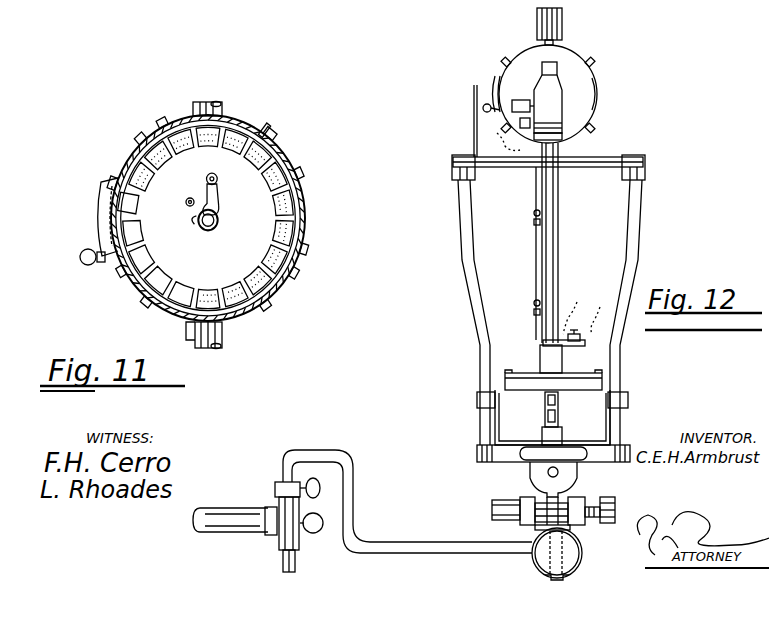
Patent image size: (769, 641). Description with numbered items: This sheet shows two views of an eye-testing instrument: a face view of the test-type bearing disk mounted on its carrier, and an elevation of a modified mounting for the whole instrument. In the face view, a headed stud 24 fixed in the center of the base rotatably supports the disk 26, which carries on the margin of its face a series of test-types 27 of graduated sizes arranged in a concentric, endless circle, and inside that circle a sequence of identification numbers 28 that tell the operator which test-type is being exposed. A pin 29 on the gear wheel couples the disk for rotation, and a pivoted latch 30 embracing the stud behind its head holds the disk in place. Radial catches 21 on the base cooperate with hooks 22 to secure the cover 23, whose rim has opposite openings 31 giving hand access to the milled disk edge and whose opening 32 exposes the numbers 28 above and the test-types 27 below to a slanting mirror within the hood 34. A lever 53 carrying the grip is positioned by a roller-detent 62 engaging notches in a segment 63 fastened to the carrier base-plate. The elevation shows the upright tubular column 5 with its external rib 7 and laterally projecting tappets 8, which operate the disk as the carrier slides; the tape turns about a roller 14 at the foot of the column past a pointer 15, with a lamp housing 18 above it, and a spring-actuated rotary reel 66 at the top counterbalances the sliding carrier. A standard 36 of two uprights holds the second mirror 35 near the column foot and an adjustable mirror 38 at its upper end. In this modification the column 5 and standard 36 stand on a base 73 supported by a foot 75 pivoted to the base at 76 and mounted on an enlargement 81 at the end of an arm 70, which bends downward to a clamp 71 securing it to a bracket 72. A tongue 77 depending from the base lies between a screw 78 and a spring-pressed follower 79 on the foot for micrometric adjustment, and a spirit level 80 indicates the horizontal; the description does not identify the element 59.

In FIG. 11, the tubular column 5 is at (226, 337).
In FIG. 12, the tubular column 5 is at (563, 232).
In FIG. 12, the rib 7 is at (534, 265).
In FIG. 12, the tappets 8 is at (534, 213).
In FIG. 12, the roller 14 is at (545, 413).
In FIG. 12, the pointer 15 is at (557, 400).
In FIG. 12, the housing 18 is at (562, 355).
In FIG. 11, the catches 21 is at (133, 141).
In FIG. 11, the hooks 22 is at (146, 133).
In FIG. 11, the cover 23 is at (298, 273).
In FIG. 12, the cover 23 is at (573, 98).
In FIG. 11, the headed stud 24 is at (214, 222).
In FIG. 11, the disk 26 is at (172, 250).
In FIG. 12, the disk 26 is at (597, 108).
In FIG. 11, the test-types 27 is at (237, 142).
In FIG. 11, the numbers 28 is at (247, 187).
In FIG. 11, the pin 29 is at (186, 203).
In FIG. 11, the pivoted latch 30 is at (214, 207).
In FIG. 11, the openings 31 is at (307, 247).
In FIG. 12, the opening 32 is at (557, 70).
In FIG. 12, the hood 34 is at (558, 118).
In FIG. 12, the second mirror 35 is at (588, 382).
In FIG. 12, the standard 36 is at (468, 305).
In FIG. 12, the adjustable mirror 38 is at (593, 167).
In FIG. 11, the lever 53 is at (91, 259).
In FIG. 12, the set screw 59 is at (533, 222).
In FIG. 11, the roller-detent 62 is at (101, 263).
In FIG. 11, the segment 63 is at (103, 237).
In FIG. 12, the segment 63 is at (498, 79).
In FIG. 12, the spring-actuated rotary reel 66 is at (561, 26).
In FIG. 12, the arm 70 is at (287, 450).
In FIG. 12, the clamp 71 is at (276, 490).
In FIG. 12, the bracket 72 is at (205, 508).
In FIG. 12, the base 73 is at (593, 452).
In FIG. 12, the foot 75 is at (577, 490).
In FIG. 12, the pivotal connection 76 is at (530, 472).
In FIG. 12, the tongue 77 is at (530, 528).
In FIG. 12, the screw 78 is at (617, 515).
In FIG. 12, the spring-pressed follower 79 is at (530, 493).
In FIG. 12, the spirit level 80 is at (563, 440).
In FIG. 12, the enlargement 81 is at (583, 550).